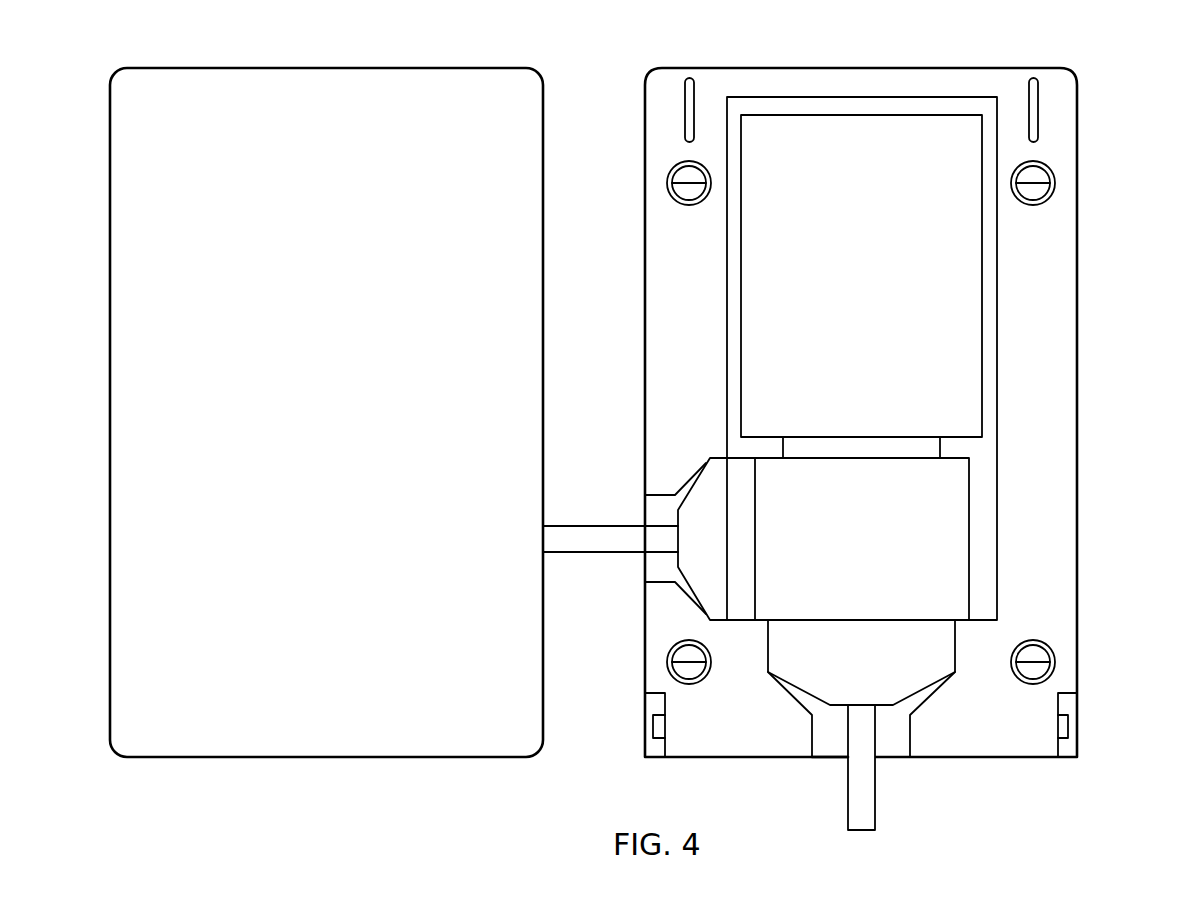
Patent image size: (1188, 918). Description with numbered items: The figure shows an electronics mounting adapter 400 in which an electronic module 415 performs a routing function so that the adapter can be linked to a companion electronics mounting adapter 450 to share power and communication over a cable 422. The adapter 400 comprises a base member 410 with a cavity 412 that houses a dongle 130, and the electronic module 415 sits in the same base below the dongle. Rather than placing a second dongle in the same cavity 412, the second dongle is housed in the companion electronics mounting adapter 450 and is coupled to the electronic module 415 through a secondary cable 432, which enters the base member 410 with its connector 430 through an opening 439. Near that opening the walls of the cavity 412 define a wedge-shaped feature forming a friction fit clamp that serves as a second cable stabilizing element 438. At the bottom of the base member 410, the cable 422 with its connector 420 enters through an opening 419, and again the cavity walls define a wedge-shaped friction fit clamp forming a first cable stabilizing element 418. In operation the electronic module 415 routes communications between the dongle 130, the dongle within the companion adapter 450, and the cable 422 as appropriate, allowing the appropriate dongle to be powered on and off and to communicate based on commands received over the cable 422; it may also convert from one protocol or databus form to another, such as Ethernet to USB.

The electronics mounting adapter 400 is at (872, 412).
The base member 410 is at (645, 255).
The cavity 412 is at (987, 313).
The dongle 130 is at (883, 298).
The electronic module 415 is at (883, 562).
The connector 430 is at (698, 477).
The second cable stabilizing element 438 is at (668, 493).
The opening 439 is at (642, 569).
The secondary cable 432 is at (592, 525).
The companion electronics mounting adapter 450 is at (348, 426).
The first cable stabilizing element 418 is at (790, 694).
The connector 420 is at (955, 650).
The opening 419 is at (828, 763).
The cable 422 is at (877, 795).